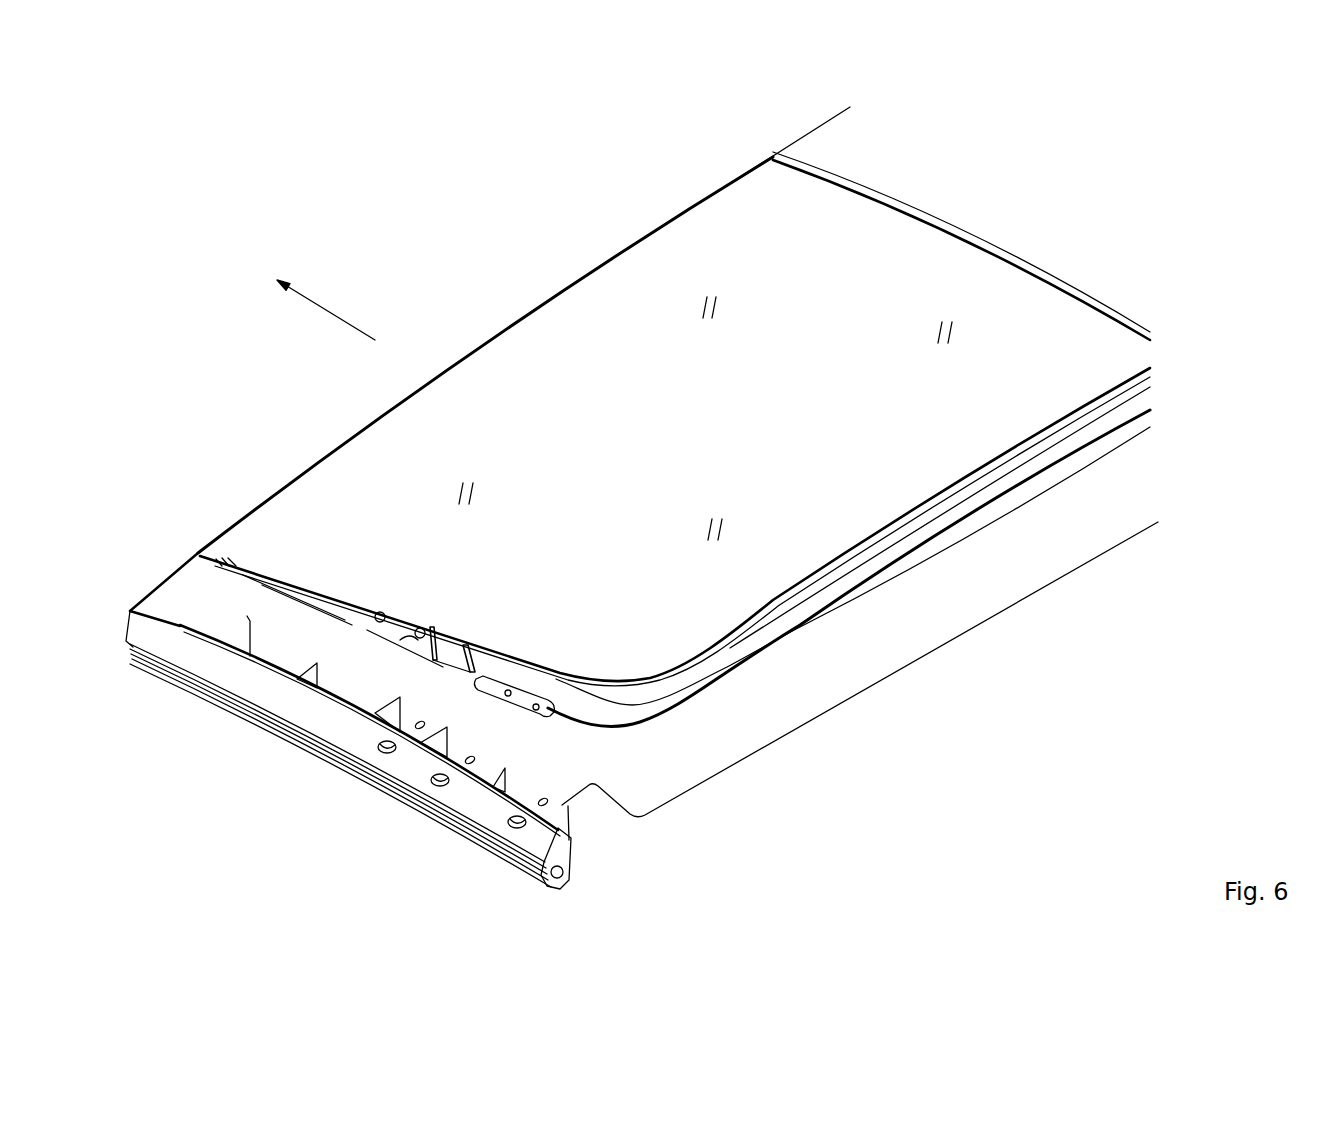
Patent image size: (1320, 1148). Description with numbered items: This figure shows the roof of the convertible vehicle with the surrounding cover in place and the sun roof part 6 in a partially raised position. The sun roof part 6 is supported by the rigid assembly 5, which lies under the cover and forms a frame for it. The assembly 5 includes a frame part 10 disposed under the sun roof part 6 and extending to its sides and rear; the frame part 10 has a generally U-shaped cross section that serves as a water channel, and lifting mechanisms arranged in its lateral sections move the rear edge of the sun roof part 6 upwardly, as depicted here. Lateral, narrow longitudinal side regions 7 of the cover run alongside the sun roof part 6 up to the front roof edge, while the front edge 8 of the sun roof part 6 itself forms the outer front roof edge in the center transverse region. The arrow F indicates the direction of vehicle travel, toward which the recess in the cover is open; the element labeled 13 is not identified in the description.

The rigid assembly 5 is at (801, 730).
The sun roof part 6 is at (803, 486).
The longitudinal side regions 7 is at (168, 598).
The front edge 8 is at (494, 346).
The frame part 10 is at (497, 750).
The actuating mechanism 13 is at (440, 651).
The direction of vehicle travel F is at (327, 307).